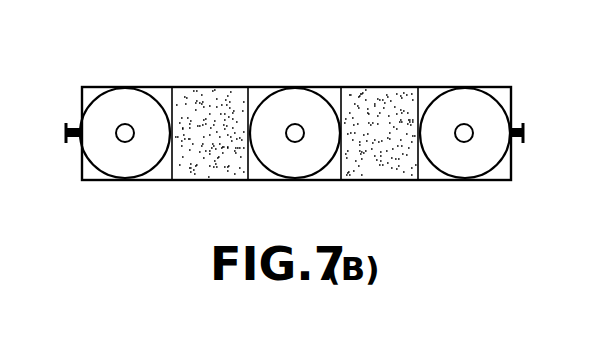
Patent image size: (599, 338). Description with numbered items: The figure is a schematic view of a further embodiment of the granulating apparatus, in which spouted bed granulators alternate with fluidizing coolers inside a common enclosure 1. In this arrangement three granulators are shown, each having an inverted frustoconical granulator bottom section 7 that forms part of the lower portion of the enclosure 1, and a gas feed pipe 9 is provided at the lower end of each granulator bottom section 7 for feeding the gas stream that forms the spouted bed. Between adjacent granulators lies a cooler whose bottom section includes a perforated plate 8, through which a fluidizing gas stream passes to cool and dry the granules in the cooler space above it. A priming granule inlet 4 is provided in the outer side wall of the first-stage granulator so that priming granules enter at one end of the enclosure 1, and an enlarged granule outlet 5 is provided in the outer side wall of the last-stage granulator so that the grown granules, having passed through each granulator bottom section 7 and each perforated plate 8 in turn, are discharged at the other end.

The enclosure 1 is at (98, 87).
The priming granule inlet 4 is at (72, 123).
The enlarged granule outlet 5 is at (514, 122).
The granulator bottom section 7 is at (163, 162).
The perforated plate 8 is at (220, 102).
The gas feed pipe 9 is at (128, 142).